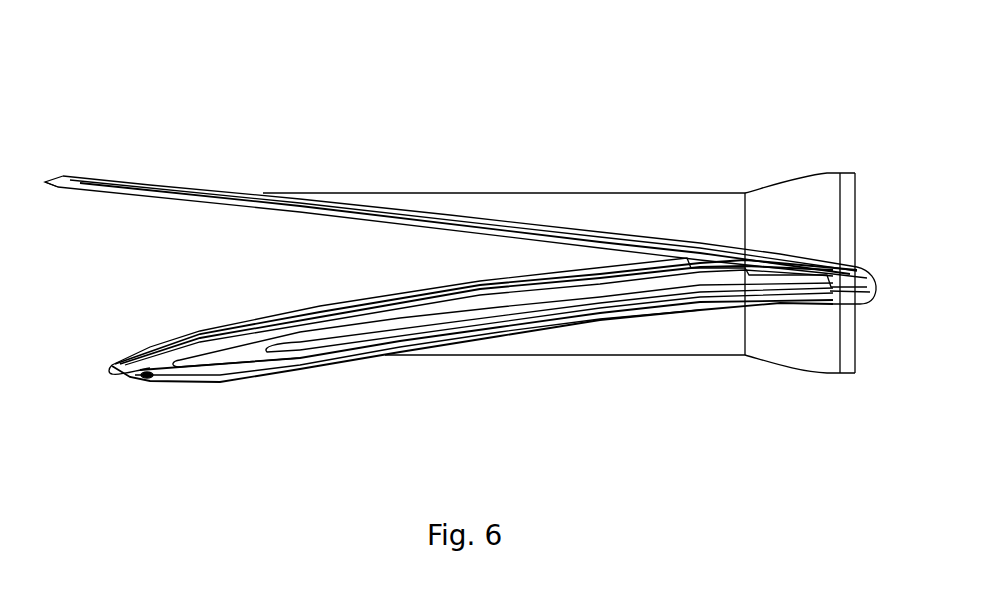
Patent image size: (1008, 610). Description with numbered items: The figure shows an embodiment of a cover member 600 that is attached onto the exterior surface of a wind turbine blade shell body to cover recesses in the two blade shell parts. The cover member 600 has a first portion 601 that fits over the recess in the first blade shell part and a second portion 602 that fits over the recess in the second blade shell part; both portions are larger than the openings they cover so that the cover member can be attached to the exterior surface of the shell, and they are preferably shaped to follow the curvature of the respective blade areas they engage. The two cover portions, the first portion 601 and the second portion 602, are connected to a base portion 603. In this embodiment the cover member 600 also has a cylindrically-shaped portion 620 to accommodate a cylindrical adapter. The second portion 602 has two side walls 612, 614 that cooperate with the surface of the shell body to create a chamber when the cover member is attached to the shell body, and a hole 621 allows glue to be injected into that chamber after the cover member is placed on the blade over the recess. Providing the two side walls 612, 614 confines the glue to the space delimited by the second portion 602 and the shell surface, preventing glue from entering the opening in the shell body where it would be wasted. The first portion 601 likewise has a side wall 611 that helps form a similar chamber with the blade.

The cover member 600 is at (160, 79).
The first portion 601 is at (433, 188).
The second portion 602 is at (488, 364).
The base portion 603 is at (822, 378).
The side wall 611 is at (53, 187).
The side wall 612 is at (112, 365).
The side wall 614 is at (208, 352).
The cylindrically-shaped portion 620 is at (645, 213).
The hole 621 is at (147, 374).